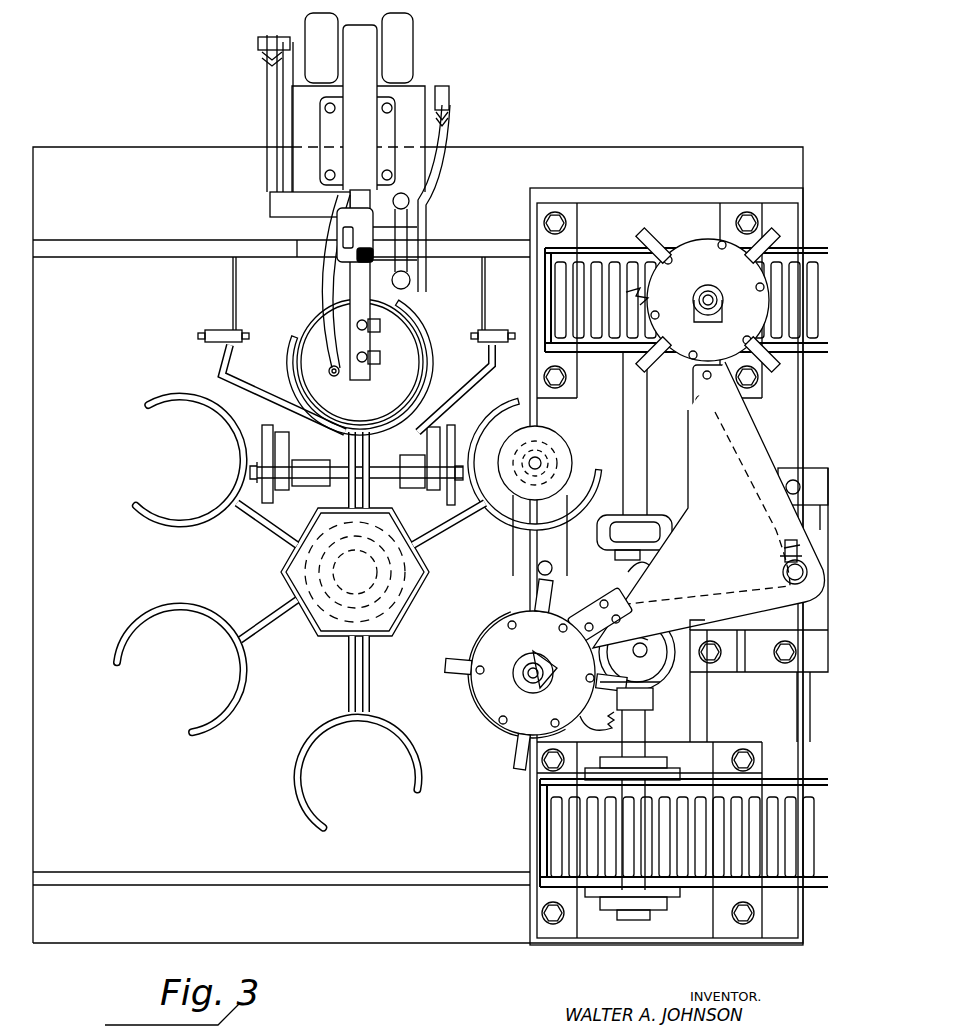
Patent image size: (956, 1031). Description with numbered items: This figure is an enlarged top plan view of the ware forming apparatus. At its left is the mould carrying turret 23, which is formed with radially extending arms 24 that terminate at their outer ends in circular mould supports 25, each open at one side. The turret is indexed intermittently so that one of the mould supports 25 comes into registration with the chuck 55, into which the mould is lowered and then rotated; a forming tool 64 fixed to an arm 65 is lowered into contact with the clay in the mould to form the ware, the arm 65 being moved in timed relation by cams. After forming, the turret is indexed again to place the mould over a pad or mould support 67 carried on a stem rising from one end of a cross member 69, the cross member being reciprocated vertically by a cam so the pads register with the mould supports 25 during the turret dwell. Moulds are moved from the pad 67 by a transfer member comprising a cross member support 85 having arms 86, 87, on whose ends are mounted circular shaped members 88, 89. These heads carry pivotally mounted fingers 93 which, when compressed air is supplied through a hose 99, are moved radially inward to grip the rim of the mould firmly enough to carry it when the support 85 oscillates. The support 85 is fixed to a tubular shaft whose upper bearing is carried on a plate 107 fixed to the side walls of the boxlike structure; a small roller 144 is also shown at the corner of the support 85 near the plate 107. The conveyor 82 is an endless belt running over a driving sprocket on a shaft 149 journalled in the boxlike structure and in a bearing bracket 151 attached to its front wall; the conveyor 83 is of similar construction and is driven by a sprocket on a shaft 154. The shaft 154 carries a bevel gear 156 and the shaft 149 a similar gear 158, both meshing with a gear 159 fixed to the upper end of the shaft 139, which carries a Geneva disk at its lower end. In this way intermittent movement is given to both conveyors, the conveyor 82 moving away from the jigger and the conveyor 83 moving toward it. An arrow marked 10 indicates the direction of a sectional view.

The view direction arrow 10 is at (425, 669).
The mould carrying turret 23 is at (355, 572).
The radially extending arms 24 is at (370, 675).
The circular mould supports 25 is at (418, 762).
The chuck 55 is at (360, 367).
The forming tool 64 is at (373, 336).
The arm 65 is at (358, 281).
The pad or mould support 67 is at (568, 445).
The cross member 69 is at (520, 548).
The conveyor 82 is at (777, 270).
The conveyor 83 is at (683, 805).
The cross member support 85 is at (709, 505).
The arm 86 is at (746, 402).
The arm 87 is at (637, 652).
The circular shaped member 88 is at (697, 300).
The circular shaped member 89 is at (531, 674).
The fingers 93 is at (456, 667).
The hose 99 is at (590, 716).
The plate 107 is at (816, 512).
The shaft 139 is at (650, 640).
The roller 144 is at (798, 602).
The shaft 149 is at (646, 459).
The bearing bracket 151 is at (650, 520).
The shaft 154 is at (647, 731).
The bevel gear 156 is at (656, 690).
The gear 158 is at (636, 571).
The gear 159 is at (690, 632).